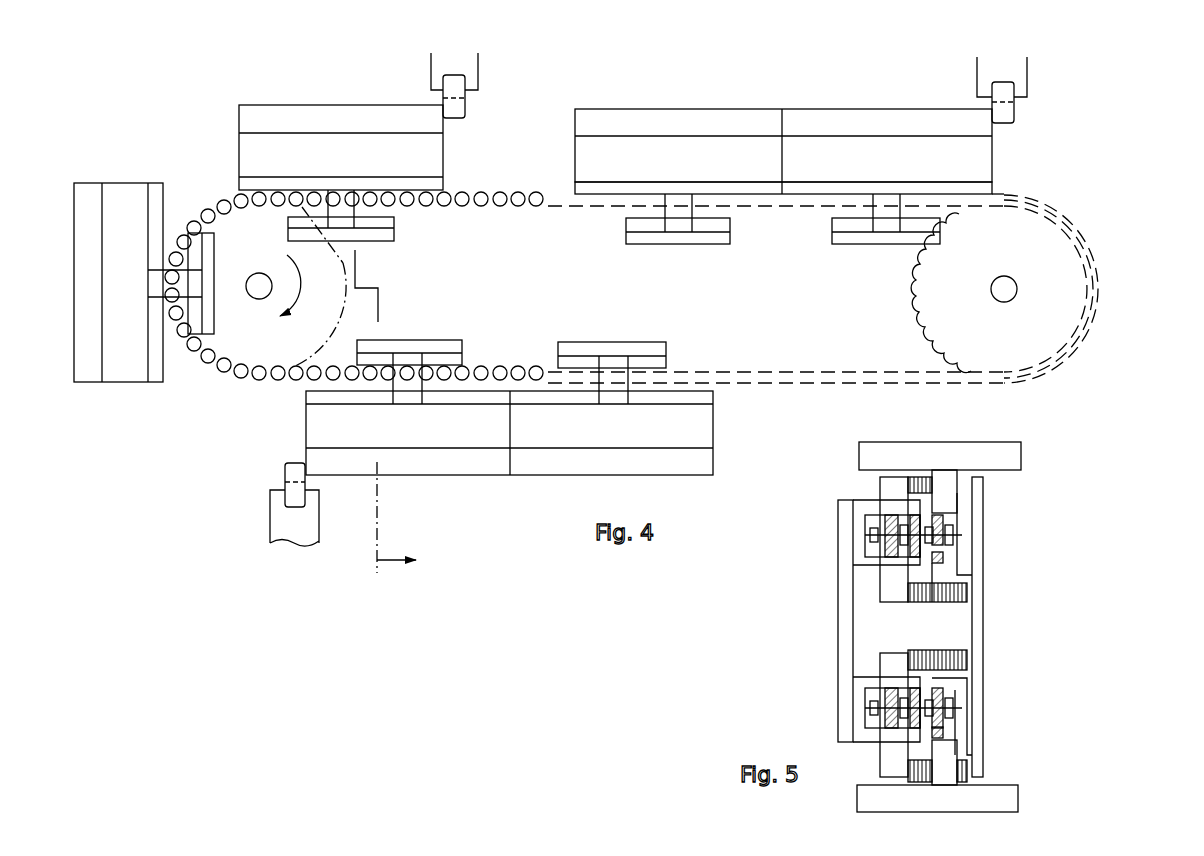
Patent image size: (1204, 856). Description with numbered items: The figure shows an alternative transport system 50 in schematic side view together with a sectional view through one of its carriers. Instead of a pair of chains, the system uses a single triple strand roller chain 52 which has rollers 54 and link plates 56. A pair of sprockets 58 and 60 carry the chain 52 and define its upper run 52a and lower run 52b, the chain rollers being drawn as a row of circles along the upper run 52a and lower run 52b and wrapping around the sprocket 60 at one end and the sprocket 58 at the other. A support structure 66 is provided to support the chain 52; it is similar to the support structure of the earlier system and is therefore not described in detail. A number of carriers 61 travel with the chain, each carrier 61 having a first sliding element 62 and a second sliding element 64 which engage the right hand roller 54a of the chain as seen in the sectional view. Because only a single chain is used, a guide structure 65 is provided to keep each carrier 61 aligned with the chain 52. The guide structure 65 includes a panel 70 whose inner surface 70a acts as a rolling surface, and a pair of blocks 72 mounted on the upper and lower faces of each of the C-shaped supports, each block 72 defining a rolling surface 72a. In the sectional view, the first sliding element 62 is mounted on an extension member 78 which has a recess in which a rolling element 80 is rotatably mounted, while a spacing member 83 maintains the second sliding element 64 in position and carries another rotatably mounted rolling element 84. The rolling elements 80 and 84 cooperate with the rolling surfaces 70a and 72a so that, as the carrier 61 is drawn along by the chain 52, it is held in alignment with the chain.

In FIG. 4, the transport system 50 is at (1084, 176).
In FIG. 4, the chain 52 is at (815, 380).
In FIG. 4, the upper run 52a is at (482, 210).
In FIG. 4, the lower run 52b is at (505, 362).
In FIG. 4, the rollers 54 is at (292, 377).
In FIG. 5, the right hand roller 54a is at (942, 719).
In FIG. 5, the link plates 56 is at (963, 541).
In FIG. 4, the sprocket 58 is at (1035, 337).
In FIG. 4, the sprocket 60 is at (237, 335).
In FIG. 4, the carriers 61 is at (687, 102).
In FIG. 4, the first sliding element 62 is at (573, 188).
In FIG. 4, the second sliding element 64 is at (736, 230).
In FIG. 5, the guide structure 65 is at (1021, 531).
In FIG. 5, the support structure 66 is at (843, 610).
In FIG. 5, the panel 70 is at (988, 660).
In FIG. 5, the inner surface 70a is at (964, 628).
In FIG. 5, the blocks 72 is at (876, 481).
In FIG. 5, the rolling surface 72a is at (926, 509).
In FIG. 5, the extension member 78 is at (941, 483).
In FIG. 5, the rolling element 80 is at (986, 488).
In FIG. 5, the spacing member 83 is at (968, 574).
In FIG. 5, the rolling element 84 is at (967, 602).